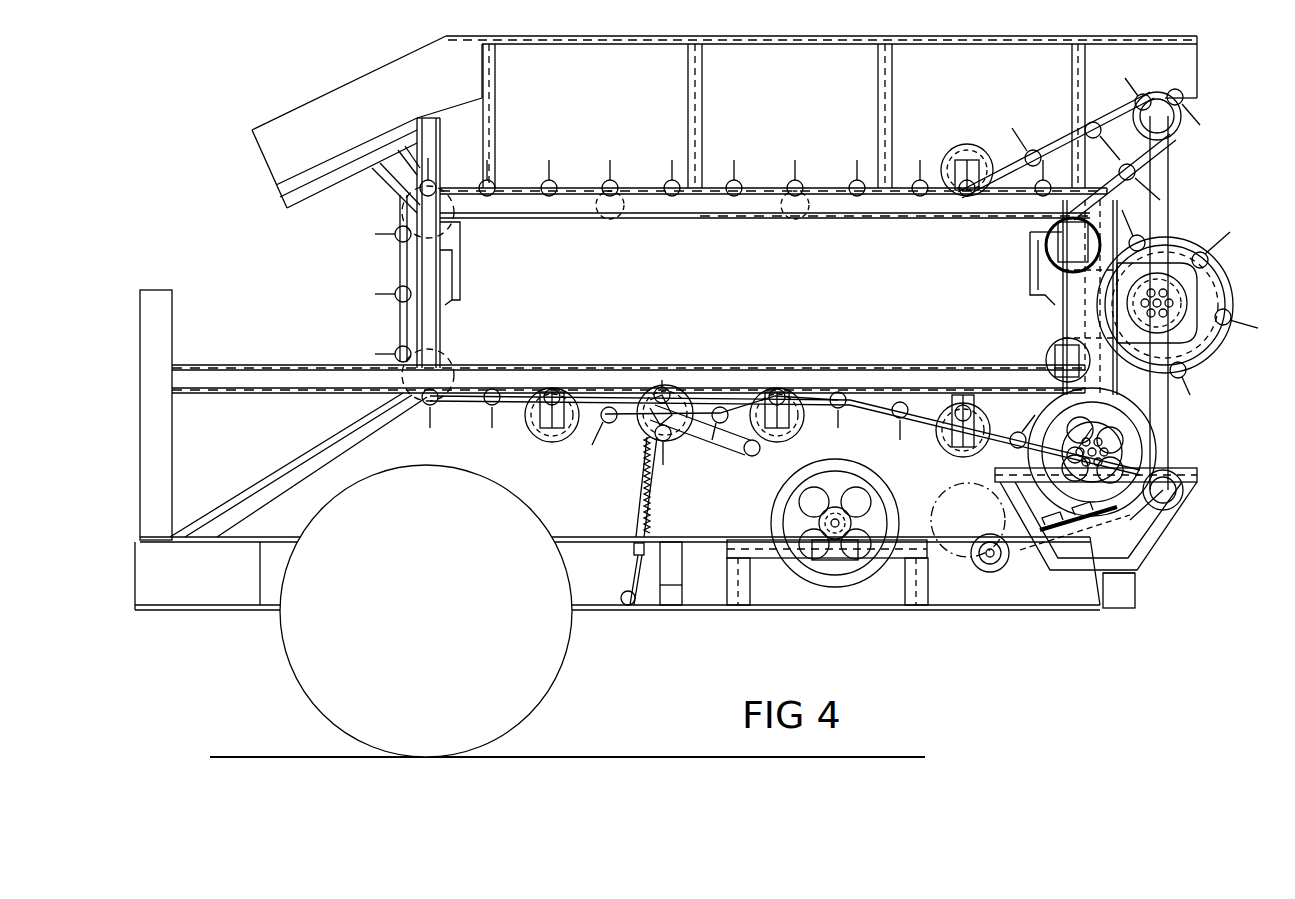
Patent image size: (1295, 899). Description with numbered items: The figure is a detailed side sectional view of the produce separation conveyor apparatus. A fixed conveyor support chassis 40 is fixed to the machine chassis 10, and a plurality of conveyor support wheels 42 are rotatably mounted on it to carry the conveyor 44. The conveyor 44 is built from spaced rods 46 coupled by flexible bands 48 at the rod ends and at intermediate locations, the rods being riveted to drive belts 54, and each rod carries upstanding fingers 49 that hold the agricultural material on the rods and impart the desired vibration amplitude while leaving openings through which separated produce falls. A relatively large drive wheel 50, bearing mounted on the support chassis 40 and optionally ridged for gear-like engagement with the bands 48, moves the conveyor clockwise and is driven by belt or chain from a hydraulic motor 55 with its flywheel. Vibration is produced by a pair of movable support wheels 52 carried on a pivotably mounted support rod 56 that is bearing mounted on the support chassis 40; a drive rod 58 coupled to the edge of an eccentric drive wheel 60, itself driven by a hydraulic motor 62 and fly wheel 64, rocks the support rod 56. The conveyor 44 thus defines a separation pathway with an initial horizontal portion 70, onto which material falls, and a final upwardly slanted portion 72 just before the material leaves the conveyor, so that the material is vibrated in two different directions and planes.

The chassis 10 is at (182, 595).
The conveyor support chassis 40 is at (970, 200).
The conveyor support wheels 42 is at (450, 225).
The conveyor 44 is at (640, 188).
The spaced rods 46 is at (735, 196).
The flexible bands 48 is at (565, 196).
The upstanding fingers 49 is at (610, 178).
The drive wheel 50 is at (1210, 290).
The movable support wheels 52 is at (1165, 116).
The drive belts 54 is at (663, 393).
The hydraulic motor 55 is at (1115, 450).
The support rod 56 is at (1163, 215).
The drive rod 58 is at (1072, 525).
The eccentric drive wheel 60 is at (968, 560).
The hydraulic motor 62 is at (840, 518).
The fly wheel 64 is at (863, 575).
The initial horizontal portion 70 is at (763, 186).
The final upwardly slanted portion 72 is at (1062, 143).